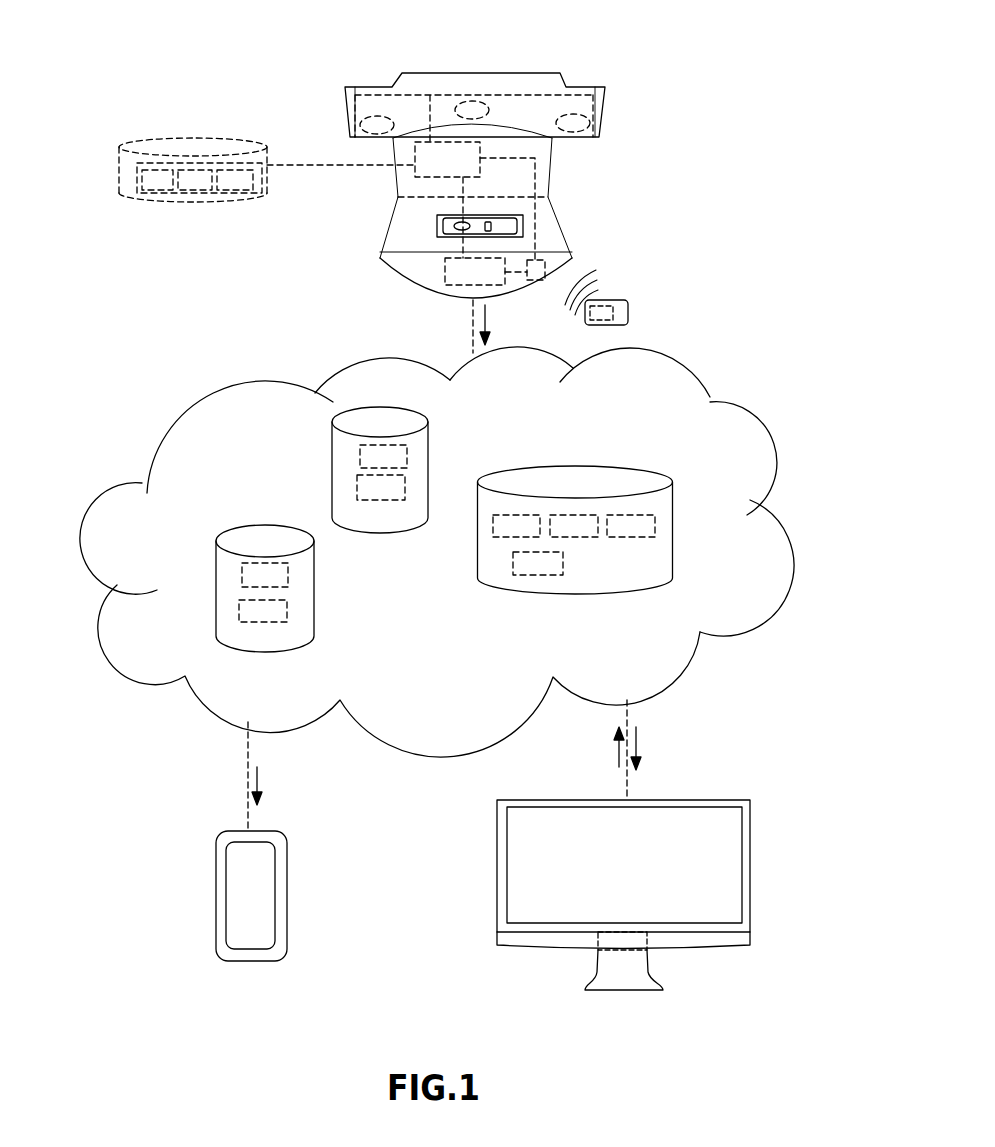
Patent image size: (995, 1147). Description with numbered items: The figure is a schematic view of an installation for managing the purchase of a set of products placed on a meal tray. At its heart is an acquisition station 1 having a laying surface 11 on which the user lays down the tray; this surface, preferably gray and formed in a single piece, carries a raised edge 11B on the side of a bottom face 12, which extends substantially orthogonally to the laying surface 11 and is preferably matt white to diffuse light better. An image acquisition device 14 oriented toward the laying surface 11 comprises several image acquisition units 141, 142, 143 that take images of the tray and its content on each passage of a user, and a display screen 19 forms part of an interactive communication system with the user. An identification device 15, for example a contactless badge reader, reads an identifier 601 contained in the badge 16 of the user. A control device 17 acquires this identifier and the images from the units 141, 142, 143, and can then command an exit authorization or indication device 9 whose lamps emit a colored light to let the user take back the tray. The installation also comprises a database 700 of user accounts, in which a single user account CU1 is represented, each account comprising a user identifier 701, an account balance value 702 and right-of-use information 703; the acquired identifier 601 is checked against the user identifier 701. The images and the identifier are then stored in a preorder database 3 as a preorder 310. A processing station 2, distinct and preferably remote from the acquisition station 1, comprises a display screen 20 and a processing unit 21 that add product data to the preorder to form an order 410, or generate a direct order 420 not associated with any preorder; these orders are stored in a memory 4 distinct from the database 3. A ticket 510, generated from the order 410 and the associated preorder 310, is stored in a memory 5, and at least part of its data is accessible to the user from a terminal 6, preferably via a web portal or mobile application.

The acquisition station 1 is at (711, 223).
The processing station 2 is at (757, 1007).
The preorder database 3 is at (688, 532).
The preorder 310 is at (525, 515).
The order memory 4 is at (385, 425).
The order 410 is at (355, 446).
The direct order 420 is at (352, 482).
The ticket memory 5 is at (320, 554).
The ticket 510 is at (283, 580).
The terminal 6 is at (290, 945).
The exit authorization or indication device 9 is at (343, 98).
The laying surface 11 is at (417, 223).
The raised edge 11B is at (403, 200).
The bottom face 12 is at (541, 152).
The image acquisition device 14 is at (525, 97).
The image acquisition unit 141 is at (465, 101).
The image acquisition unit 142 is at (378, 134).
The image acquisition unit 143 is at (590, 122).
The identification device 15 is at (542, 270).
The badge 16 is at (628, 316).
The identifier 601 is at (604, 306).
The control device 17 is at (447, 159).
The display screen 19 is at (458, 272).
The display screen 20 is at (744, 840).
The processing unit 21 is at (633, 950).
The database of user accounts 700 is at (150, 140).
The user account CU1 is at (172, 164).
The user identifier 701 is at (142, 182).
The account balance value 702 is at (193, 190).
The right-of-use information 703 is at (230, 190).